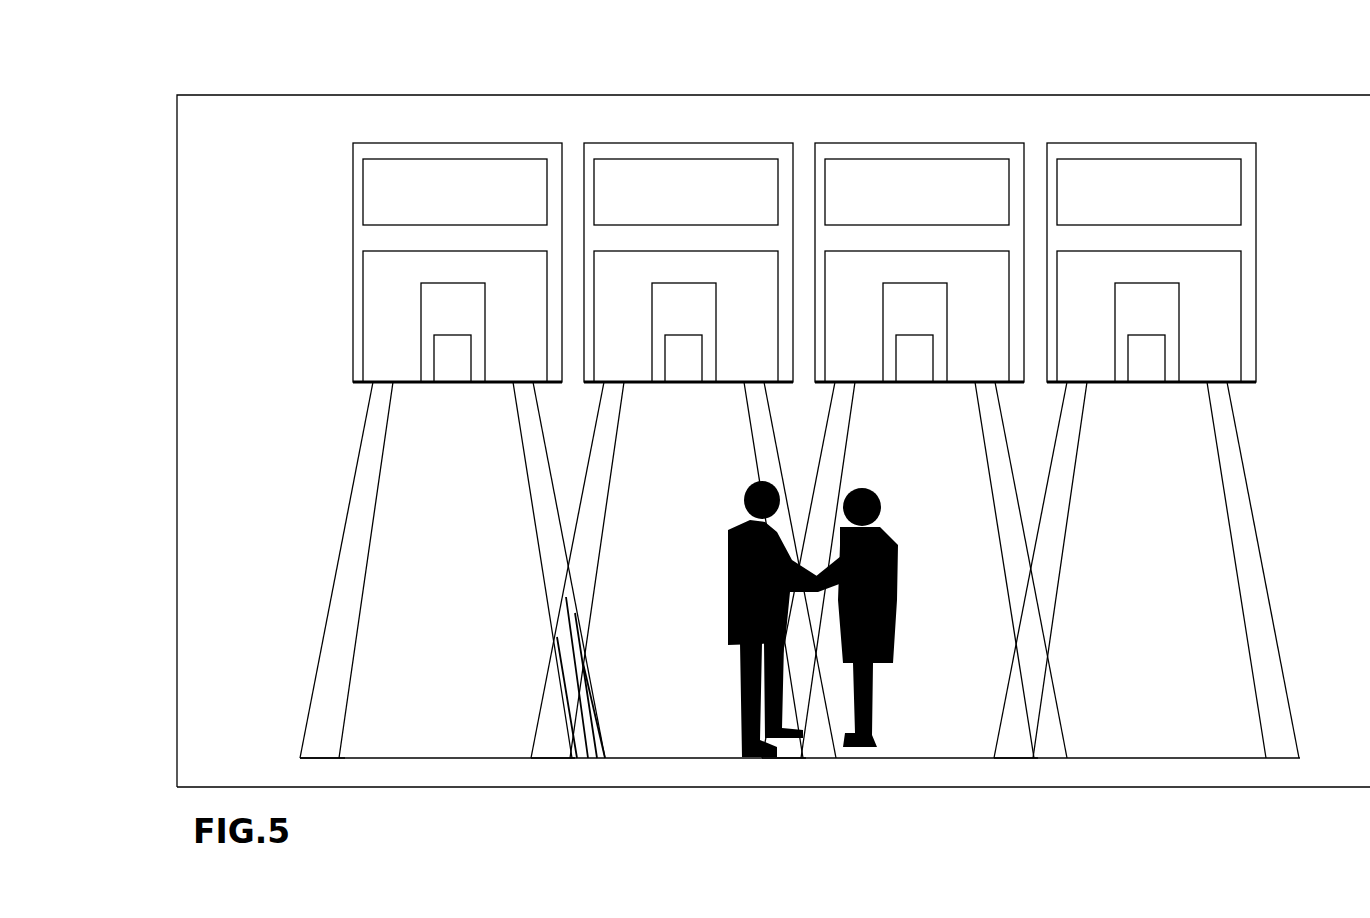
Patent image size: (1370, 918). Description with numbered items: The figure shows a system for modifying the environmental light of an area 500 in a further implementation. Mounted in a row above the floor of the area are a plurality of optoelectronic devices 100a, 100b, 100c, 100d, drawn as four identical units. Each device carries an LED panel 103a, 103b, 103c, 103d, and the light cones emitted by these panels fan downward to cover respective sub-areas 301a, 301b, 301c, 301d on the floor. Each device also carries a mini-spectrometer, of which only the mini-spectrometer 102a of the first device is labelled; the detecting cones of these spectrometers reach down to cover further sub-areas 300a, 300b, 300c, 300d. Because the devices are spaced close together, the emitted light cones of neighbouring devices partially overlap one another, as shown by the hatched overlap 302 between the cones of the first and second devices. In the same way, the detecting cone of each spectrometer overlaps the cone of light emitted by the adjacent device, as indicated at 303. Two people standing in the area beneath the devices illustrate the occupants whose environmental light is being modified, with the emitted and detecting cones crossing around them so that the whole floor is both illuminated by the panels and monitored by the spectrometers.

The area 500 is at (222, 90).
The optoelectronic device 100a is at (450, 141).
The optoelectronic device 100b is at (700, 141).
The optoelectronic device 100c is at (935, 141).
The optoelectronic device 100d is at (1160, 141).
The LED panel 103a is at (428, 331).
The LED panel 103b is at (659, 331).
The LED panel 103c is at (890, 331).
The LED panel 103d is at (1122, 331).
The mini-spectrometer 102a is at (455, 357).
The sub-area 301a is at (369, 418).
The sub-area 301b is at (599, 419).
The sub-area 301c is at (831, 420).
The sub-area 301d is at (1062, 420).
The sub-area 300a is at (340, 738).
The sub-area 300b is at (571, 737).
The sub-area 300c is at (802, 737).
The sub-area 300d is at (1031, 737).
The overlap of light cones 302 is at (568, 638).
The overlap of detecting cone with light cone 303 is at (594, 714).